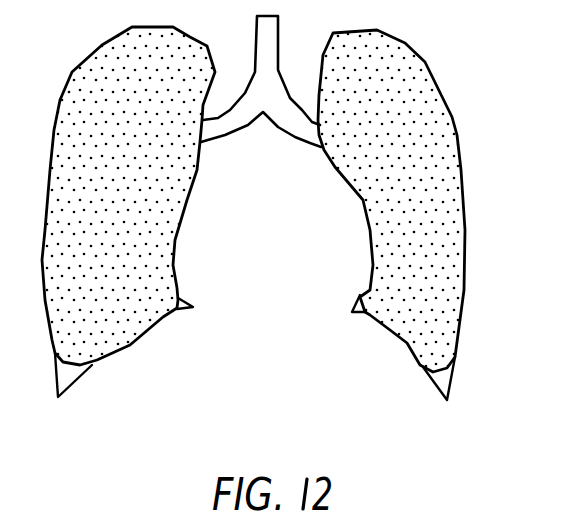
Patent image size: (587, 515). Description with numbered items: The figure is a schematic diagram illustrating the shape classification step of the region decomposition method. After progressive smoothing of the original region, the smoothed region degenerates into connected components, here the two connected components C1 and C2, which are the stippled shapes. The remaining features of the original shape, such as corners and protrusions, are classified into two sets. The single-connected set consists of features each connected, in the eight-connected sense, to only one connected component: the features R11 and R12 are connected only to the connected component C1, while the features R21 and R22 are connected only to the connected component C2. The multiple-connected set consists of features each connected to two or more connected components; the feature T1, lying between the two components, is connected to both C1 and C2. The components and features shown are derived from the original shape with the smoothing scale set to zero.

The connected component C1 is at (142, 198).
The connected component C2 is at (428, 201).
The multiple-connected feature T1 is at (263, 83).
The single-connected feature R11 is at (67, 378).
The single-connected feature R12 is at (186, 309).
The single-connected feature R21 is at (358, 313).
The single-connected feature R22 is at (445, 387).